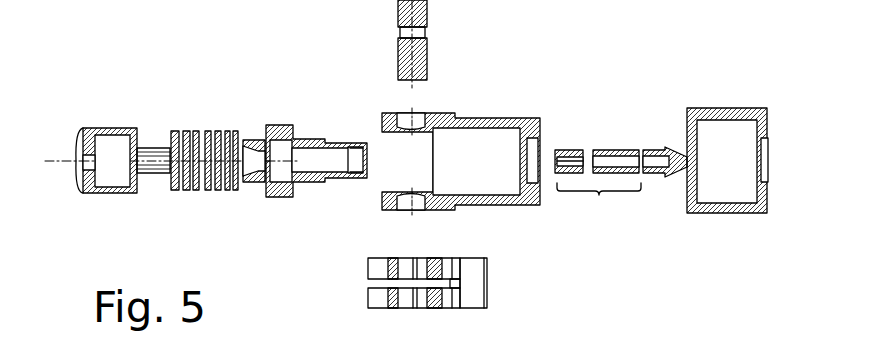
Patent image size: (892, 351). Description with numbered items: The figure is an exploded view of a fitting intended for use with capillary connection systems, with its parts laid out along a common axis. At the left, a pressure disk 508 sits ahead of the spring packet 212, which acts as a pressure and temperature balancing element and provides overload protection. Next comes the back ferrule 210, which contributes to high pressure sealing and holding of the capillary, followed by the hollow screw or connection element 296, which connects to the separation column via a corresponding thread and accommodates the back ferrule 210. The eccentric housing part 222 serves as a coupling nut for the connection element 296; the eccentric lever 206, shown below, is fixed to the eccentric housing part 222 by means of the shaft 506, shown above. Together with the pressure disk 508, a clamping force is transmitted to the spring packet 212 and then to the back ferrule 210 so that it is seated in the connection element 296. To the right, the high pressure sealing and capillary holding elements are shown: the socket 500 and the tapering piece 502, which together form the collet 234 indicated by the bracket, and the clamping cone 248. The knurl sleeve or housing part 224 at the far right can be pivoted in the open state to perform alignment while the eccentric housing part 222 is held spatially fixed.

The eccentric lever 206 is at (487, 280).
The back ferrule 210 is at (250, 135).
The spring packet 212 is at (207, 191).
The eccentric housing part 222 is at (480, 113).
The knurl sleeve or housing part 224 is at (733, 108).
The collet 234 is at (599, 208).
The clamping cone 248 is at (660, 155).
The hollow screw or connection element 296 is at (303, 183).
The socket 500 is at (620, 148).
The tapering piece 502 is at (566, 148).
The shaft 506 is at (398, 57).
The pressure disk 508 is at (95, 194).